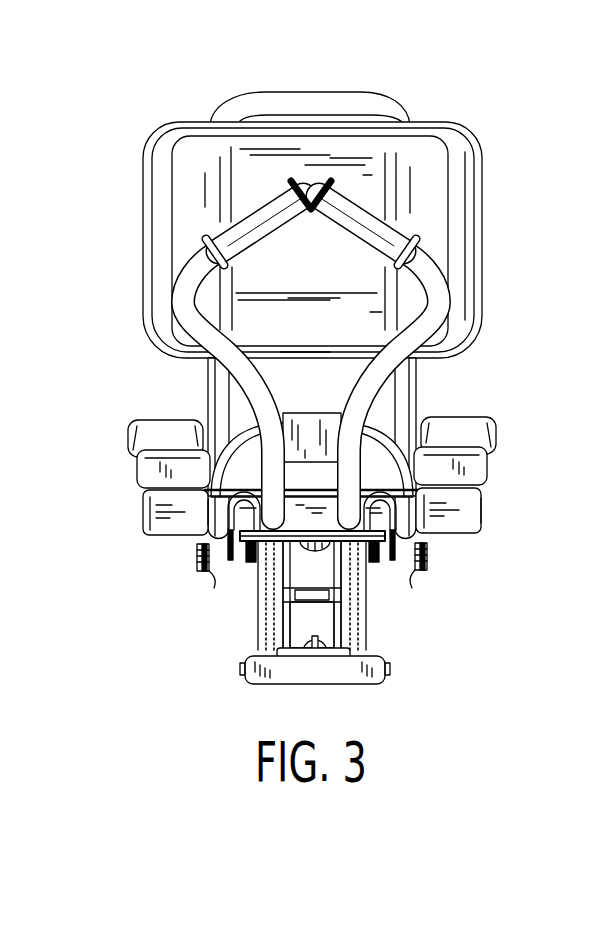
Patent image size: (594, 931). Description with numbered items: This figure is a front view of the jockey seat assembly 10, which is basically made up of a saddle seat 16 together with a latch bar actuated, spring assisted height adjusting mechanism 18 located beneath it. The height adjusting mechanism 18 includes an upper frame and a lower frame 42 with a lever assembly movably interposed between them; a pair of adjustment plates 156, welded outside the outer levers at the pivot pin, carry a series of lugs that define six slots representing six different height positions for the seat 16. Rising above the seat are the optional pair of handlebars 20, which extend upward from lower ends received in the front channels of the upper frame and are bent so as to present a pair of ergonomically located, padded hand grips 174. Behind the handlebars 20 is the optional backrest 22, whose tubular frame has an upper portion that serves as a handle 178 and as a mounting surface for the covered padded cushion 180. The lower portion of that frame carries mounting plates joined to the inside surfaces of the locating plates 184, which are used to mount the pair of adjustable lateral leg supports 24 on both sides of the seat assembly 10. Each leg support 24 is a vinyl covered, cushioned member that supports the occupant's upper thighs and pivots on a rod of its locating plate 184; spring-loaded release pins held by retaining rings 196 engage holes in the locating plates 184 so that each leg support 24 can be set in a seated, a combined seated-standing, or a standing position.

The jockey seat assembly 10 is at (348, 386).
The saddle seat 16 is at (313, 412).
The height adjusting mechanism 18 is at (343, 626).
The handlebars 20 is at (418, 337).
The backrest 22 is at (486, 173).
The adjustable lateral leg supports 24 is at (133, 466).
The lower frame 42 is at (334, 684).
The adjustment plates 156 is at (265, 627).
The padded hand grips 174 is at (208, 238).
The handle 178 is at (312, 90).
The covered padded cushion 180 is at (437, 207).
The locating plates 184 is at (214, 580).
The retaining rings 196 is at (197, 564).